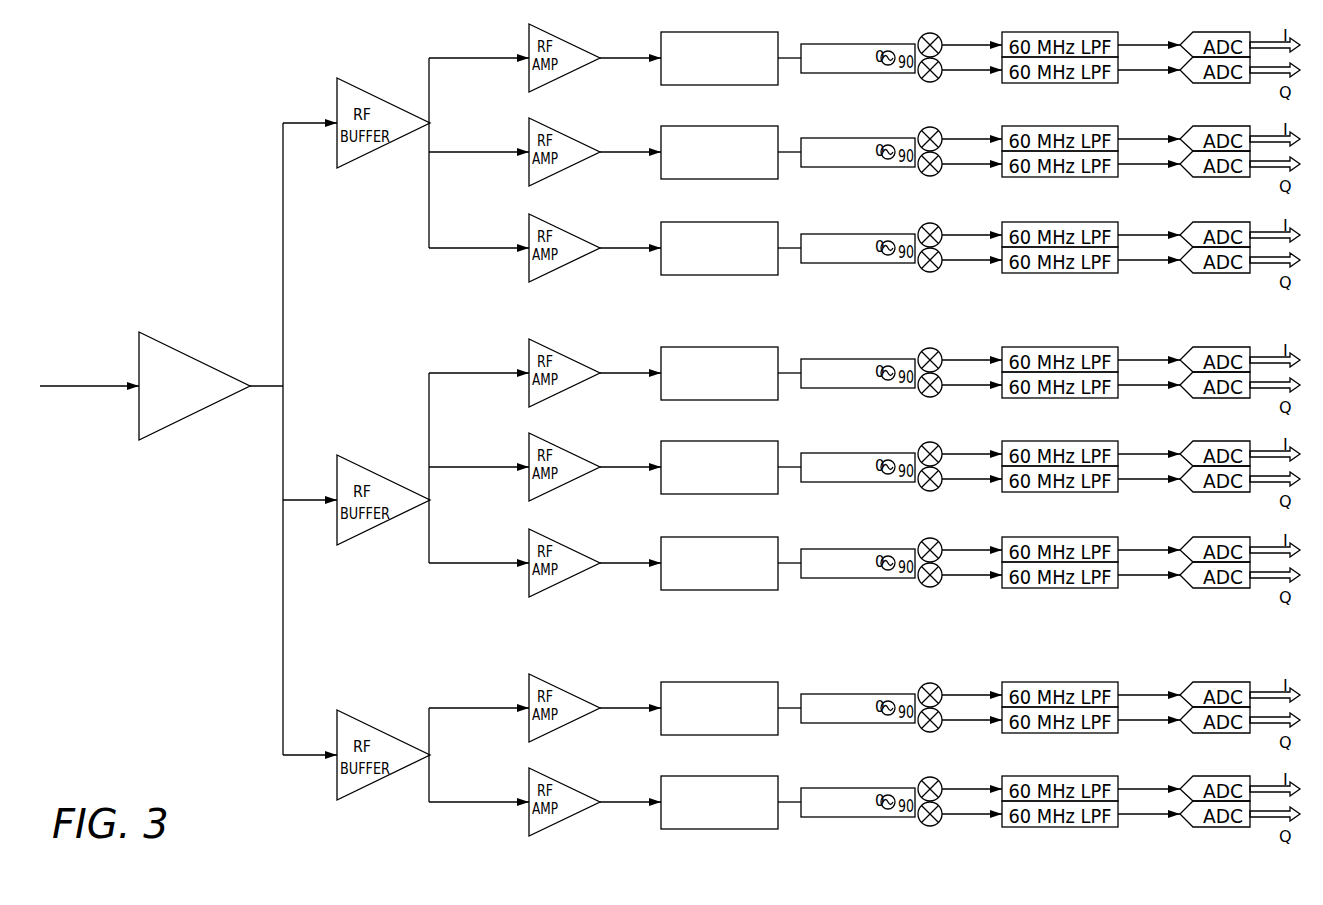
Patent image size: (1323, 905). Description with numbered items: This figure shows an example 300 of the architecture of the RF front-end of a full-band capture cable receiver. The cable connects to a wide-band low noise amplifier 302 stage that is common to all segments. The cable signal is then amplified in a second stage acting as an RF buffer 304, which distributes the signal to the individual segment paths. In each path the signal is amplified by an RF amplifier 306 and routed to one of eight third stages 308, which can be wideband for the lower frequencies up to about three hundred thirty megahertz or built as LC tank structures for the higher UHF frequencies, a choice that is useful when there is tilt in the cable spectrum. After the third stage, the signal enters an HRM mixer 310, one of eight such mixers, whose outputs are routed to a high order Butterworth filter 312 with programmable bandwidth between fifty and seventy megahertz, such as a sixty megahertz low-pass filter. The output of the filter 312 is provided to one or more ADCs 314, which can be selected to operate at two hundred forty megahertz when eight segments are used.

The RF front-end architecture 300 is at (142, 148).
The wide-band low noise amplifier 302 is at (181, 352).
The RF buffer 304 is at (380, 90).
The RF amplifier 306 is at (580, 50).
The third stage 308 is at (726, 45).
The HRM mixer 310 is at (898, 45).
The butter-worth filter 312 is at (1035, 44).
The ADC 314 is at (1213, 51).